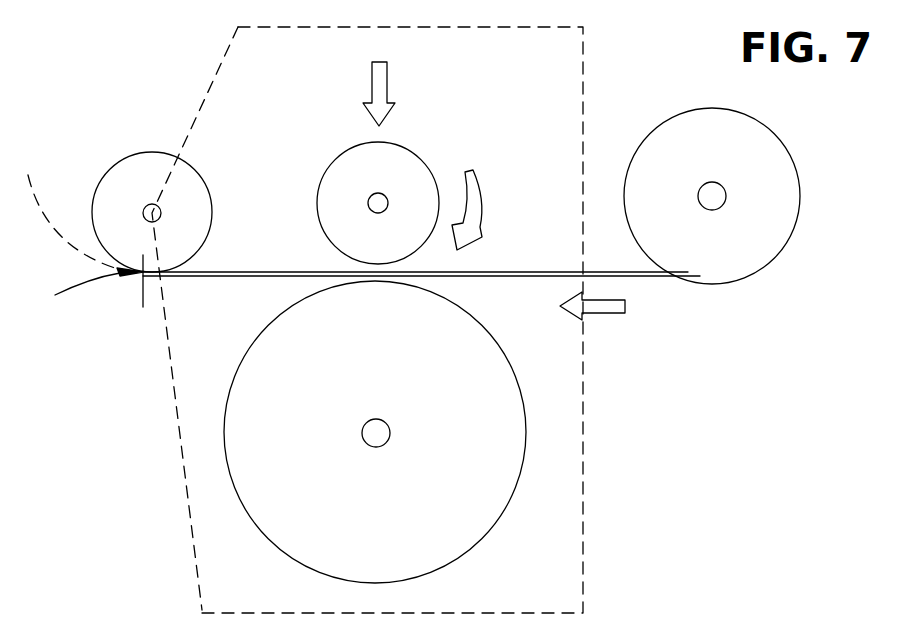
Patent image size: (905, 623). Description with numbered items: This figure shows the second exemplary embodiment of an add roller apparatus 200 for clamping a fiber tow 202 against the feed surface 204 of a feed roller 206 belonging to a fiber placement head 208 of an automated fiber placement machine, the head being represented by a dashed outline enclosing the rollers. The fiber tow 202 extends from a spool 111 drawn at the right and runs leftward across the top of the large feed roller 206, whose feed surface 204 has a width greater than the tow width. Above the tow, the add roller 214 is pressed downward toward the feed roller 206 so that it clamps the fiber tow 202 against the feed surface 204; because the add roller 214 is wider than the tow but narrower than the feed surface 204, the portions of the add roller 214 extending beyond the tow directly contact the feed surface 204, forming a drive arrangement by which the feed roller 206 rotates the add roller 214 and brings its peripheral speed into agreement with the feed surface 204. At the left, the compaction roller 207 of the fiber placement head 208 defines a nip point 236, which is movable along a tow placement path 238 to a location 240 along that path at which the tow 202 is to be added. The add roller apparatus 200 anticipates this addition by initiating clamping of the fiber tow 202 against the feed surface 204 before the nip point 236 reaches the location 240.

The add roller apparatus 200 is at (605, 78).
The fiber placement head 208 is at (228, 50).
The spool 111 is at (762, 167).
The add roller 214 is at (405, 168).
The compaction roller 207 is at (118, 161).
The fiber tow 202 is at (643, 285).
The feed surface 204 is at (528, 418).
The feed roller 206 is at (508, 458).
The nip point 236 is at (81, 294).
The tow placement path 238 is at (45, 210).
The location 240 is at (143, 289).